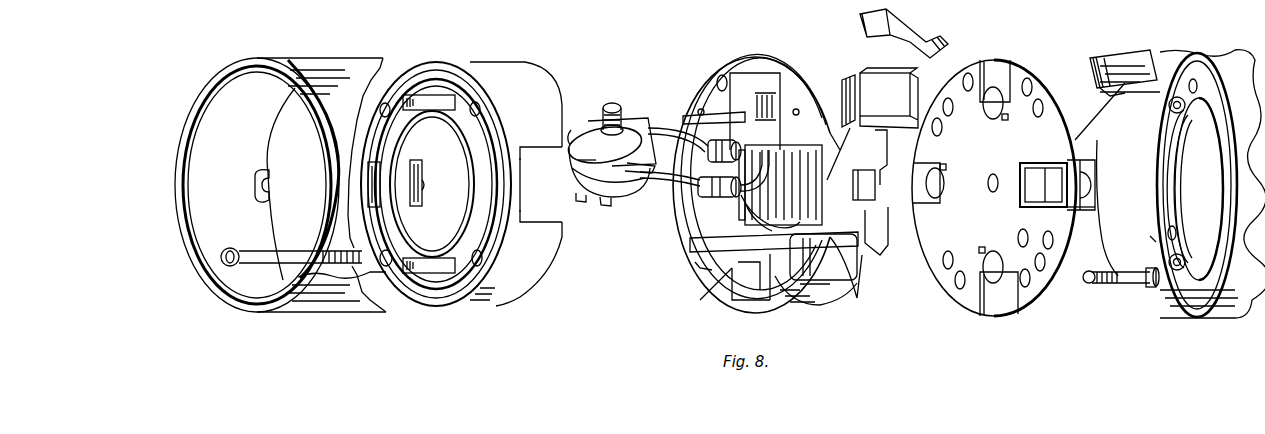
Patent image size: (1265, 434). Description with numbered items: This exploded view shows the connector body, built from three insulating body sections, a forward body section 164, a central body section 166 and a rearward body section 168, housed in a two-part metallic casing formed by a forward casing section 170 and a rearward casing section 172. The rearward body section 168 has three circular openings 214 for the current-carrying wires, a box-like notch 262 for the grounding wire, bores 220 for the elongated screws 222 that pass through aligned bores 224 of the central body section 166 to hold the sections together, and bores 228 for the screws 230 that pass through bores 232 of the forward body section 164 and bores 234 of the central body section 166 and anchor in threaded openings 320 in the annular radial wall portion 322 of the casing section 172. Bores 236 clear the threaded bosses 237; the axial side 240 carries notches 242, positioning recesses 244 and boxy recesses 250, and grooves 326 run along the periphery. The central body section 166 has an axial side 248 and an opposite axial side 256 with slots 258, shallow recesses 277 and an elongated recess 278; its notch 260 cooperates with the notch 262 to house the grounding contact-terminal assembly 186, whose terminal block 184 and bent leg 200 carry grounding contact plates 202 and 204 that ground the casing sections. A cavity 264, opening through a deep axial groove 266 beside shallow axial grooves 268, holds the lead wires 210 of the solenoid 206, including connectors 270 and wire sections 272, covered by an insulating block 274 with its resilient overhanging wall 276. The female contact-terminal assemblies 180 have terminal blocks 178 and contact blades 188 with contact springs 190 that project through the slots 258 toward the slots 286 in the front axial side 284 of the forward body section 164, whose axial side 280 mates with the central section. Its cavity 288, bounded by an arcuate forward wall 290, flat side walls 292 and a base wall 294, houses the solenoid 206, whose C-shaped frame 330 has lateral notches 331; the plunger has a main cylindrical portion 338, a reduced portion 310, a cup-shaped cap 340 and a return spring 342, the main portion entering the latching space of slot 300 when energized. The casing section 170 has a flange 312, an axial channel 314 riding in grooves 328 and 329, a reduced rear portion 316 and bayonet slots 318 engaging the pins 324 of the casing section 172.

The forward body section 164 is at (526, 284).
The central body section 166 is at (840, 292).
The rearward body section 168 is at (1050, 312).
The forward casing section 170 is at (318, 63).
The rearward casing section 172 is at (1220, 312).
The terminal blocks 178 is at (852, 270).
The female contact-terminal assemblies 180 is at (792, 300).
The terminal block 184 is at (1088, 185).
The grounding contact-terminal assembly 186 is at (1092, 206).
The contact blades 188 is at (700, 210).
The contact springs 190 is at (684, 116).
The bent leg 200 is at (1052, 208).
The grounding contact plate 202 is at (1124, 62).
The grounding contact plate 204 is at (870, 22).
The solenoid 206 is at (578, 166).
The lead wires 210 is at (657, 135).
The circular openings 214 is at (990, 120).
The axial bores 220 is at (968, 74).
The elongated screws 222 is at (1100, 286).
The axial bores 224 is at (715, 82).
The axial bores 228 is at (948, 117).
The screws 230 is at (284, 252).
The axial bores 232 is at (479, 106).
The axial bores 234 is at (704, 110).
The bores 236 is at (1026, 78).
The threaded bosses 237 is at (1170, 112).
The axial side 240 is at (940, 272).
The notches 242 is at (914, 197).
The positioning recesses 244 is at (992, 193).
The axial side 248 is at (720, 82).
The boxy recesses 250 is at (1008, 120).
The axial side 256 is at (755, 290).
The axial slots 258 is at (776, 66).
The notch 260 is at (885, 160).
The box-like notch 262 is at (1096, 168).
The cavity 264 is at (840, 142).
The deep axial groove 266 is at (873, 182).
The shallow axial grooves 268 is at (880, 246).
The connectors 270 is at (710, 155).
The lead wire sections 272 is at (772, 142).
The insulating block 274 is at (882, 70).
The overhanging wall 276 is at (846, 76).
The shallow recesses 277 is at (775, 212).
The elongated recess 278 is at (742, 183).
The axial side 280 is at (548, 102).
The front axial side 284 is at (442, 82).
The elongated slots 286 is at (415, 93).
The cavity 288 is at (507, 175).
The arcuate axially forward wall 290 is at (520, 216).
The flat parallel side walls 292 is at (524, 148).
The flat base wall 294 is at (519, 190).
The elongated slot 300 is at (418, 190).
The reduced portion 310 is at (583, 202).
The flange 312 is at (196, 104).
The axial channel 314 is at (208, 266).
The reduced diameter rear portion 316 is at (381, 60).
The bayonet slots 318 is at (270, 184).
The threaded openings 320 is at (1186, 216).
The annular radial wall portion 322 is at (1185, 170).
The pins 324 is at (1256, 120).
The axially extending grooves 326 is at (1149, 235).
The axial groove 328 is at (362, 274).
The axial groove 329 is at (702, 290).
The C-shaped metallic frame 330 is at (638, 128).
The lateral notches 331 is at (640, 161).
The main cylindrical portion 338 is at (606, 206).
The cup-shaped cap 340 is at (612, 117).
The coil return spring 342 is at (600, 123).